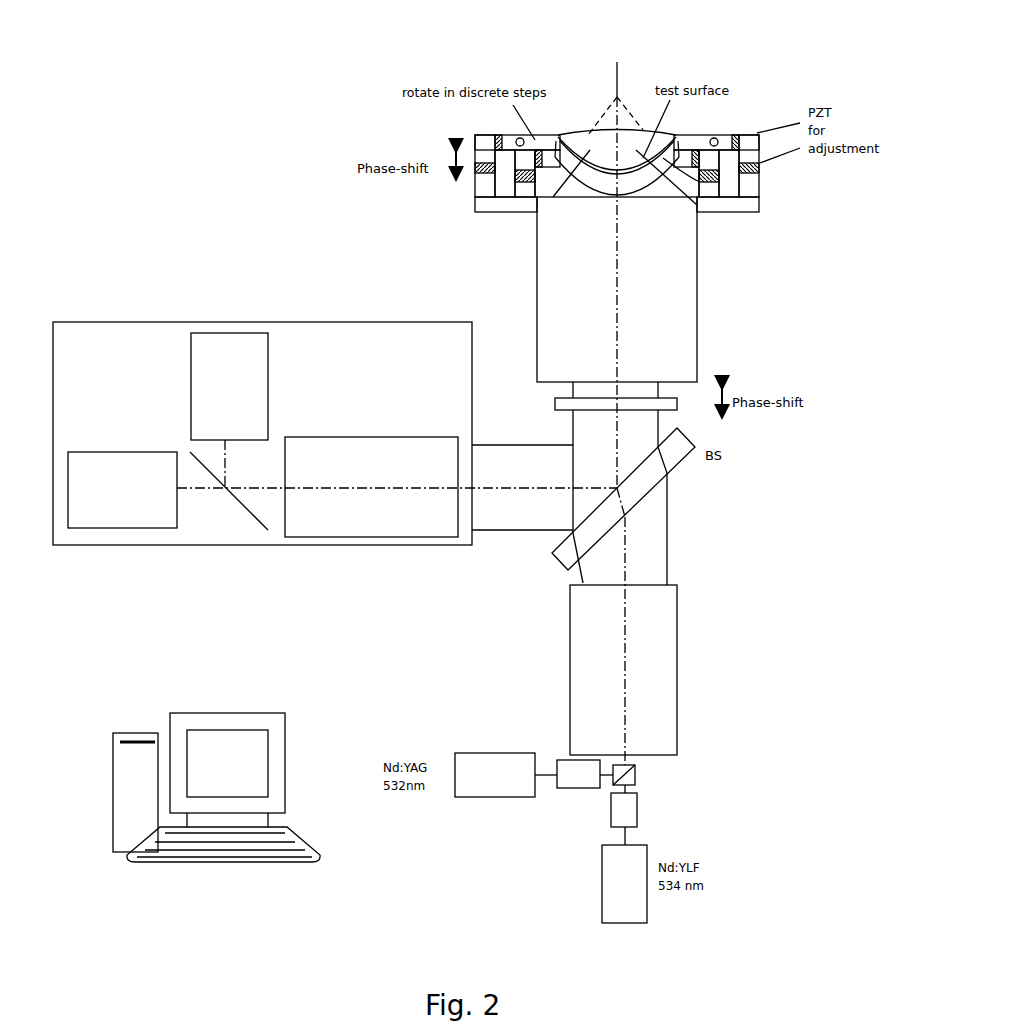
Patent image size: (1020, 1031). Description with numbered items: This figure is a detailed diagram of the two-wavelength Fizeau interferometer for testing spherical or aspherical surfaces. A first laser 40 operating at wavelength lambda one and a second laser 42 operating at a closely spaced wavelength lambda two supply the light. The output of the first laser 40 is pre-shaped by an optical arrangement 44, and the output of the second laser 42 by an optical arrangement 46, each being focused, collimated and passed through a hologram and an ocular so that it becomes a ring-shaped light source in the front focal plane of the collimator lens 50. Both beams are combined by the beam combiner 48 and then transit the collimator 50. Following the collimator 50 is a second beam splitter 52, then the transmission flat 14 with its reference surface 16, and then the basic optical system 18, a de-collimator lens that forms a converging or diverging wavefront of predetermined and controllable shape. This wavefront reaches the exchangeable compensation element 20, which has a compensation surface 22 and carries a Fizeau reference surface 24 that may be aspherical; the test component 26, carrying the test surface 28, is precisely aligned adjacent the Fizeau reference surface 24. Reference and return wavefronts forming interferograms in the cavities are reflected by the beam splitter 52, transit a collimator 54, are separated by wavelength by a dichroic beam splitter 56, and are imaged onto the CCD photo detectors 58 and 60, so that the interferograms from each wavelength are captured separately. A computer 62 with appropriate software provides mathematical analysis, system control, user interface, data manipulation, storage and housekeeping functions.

The transmission flat 14 is at (557, 405).
The reference surface 16 is at (570, 397).
The basic optical system 18 is at (663, 315).
The compensation element 20 is at (618, 174).
The compensation surface 22 is at (600, 198).
The Fizeau reference surface 24 is at (758, 200).
The test component 26 is at (600, 143).
The test surface 28 is at (584, 168).
The first laser 40 is at (473, 753).
The second laser 42 is at (600, 860).
The optical arrangement 44 is at (568, 785).
The optical arrangement 46 is at (630, 814).
The beam combiner 48 is at (635, 775).
The collimator lens 50 is at (677, 655).
The second beam splitter 52 is at (680, 463).
The collimator 54 is at (357, 528).
The dichroic beam splitter 56 is at (240, 505).
The CCD photo detector 58 is at (270, 375).
The CCD photo detector 60 is at (93, 528).
The computer 62 is at (128, 712).